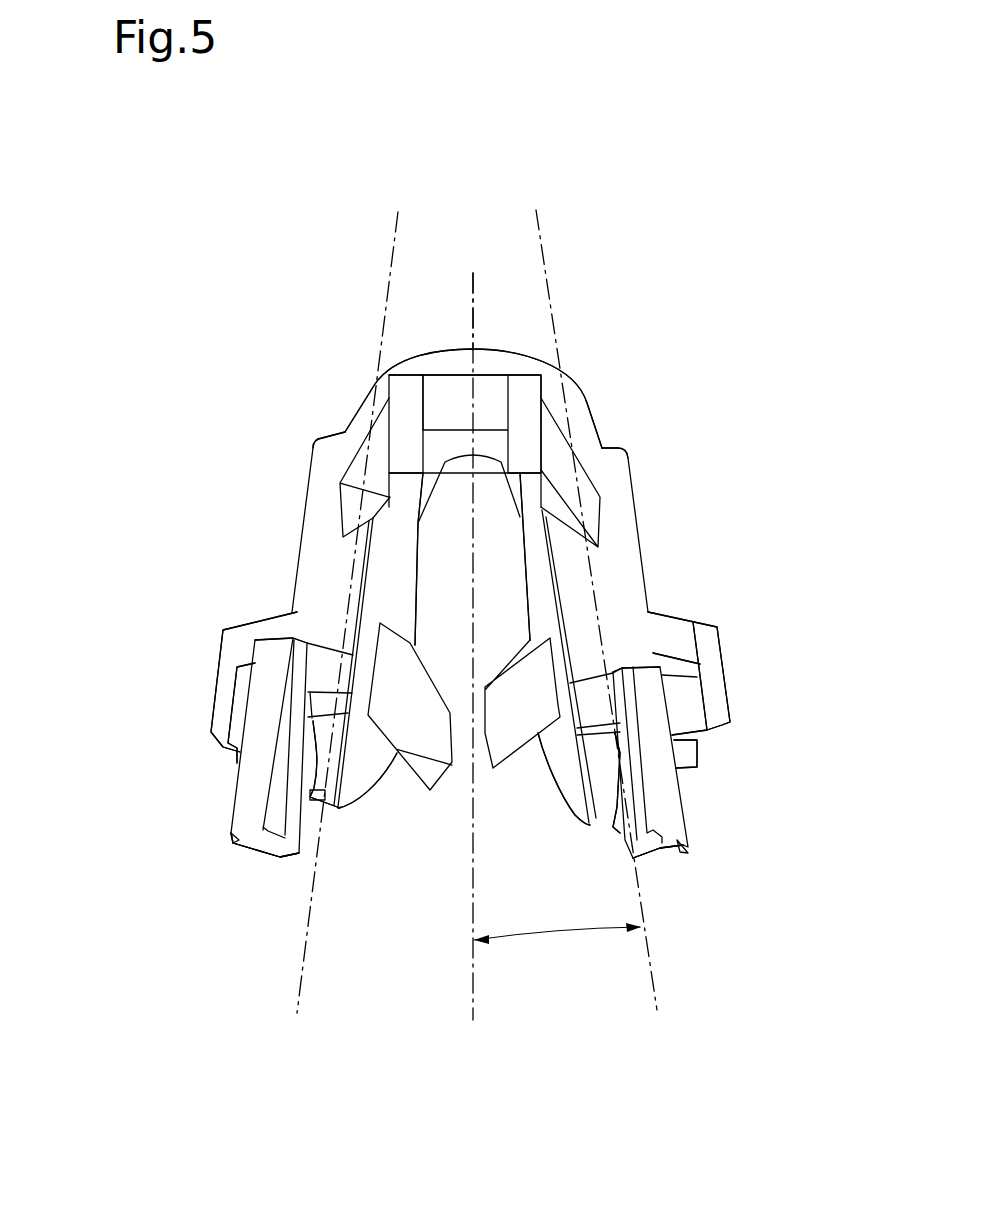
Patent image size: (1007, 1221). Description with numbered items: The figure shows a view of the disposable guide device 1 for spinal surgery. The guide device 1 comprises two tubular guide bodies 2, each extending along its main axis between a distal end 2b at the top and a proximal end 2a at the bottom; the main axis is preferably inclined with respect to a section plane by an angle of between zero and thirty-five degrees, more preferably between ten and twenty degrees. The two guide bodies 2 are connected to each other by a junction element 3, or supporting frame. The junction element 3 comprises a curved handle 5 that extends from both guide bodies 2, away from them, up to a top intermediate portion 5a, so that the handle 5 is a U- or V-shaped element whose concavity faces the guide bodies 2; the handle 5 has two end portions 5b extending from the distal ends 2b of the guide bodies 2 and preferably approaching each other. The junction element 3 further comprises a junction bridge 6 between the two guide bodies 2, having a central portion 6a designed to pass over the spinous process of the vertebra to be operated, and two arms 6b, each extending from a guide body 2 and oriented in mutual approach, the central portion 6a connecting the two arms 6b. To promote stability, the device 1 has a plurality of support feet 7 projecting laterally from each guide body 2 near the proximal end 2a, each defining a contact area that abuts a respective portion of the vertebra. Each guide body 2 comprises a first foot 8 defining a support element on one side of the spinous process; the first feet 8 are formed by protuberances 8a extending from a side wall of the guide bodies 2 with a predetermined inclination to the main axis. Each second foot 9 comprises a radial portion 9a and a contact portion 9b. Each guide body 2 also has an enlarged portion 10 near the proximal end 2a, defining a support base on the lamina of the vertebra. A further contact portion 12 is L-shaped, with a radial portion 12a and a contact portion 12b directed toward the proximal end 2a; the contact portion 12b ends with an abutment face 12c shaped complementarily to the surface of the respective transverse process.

The guide device 1 is at (625, 322).
The tubular guide body 2 is at (284, 524).
The proximal end 2a is at (323, 767).
The distal end 2b is at (340, 438).
The junction element 3 is at (448, 295).
The curved handle 5 is at (513, 335).
The top intermediate portion 5a is at (426, 362).
The end portion 5b is at (363, 404).
The junction bridge 6 is at (400, 362).
The central portion 6a is at (452, 417).
The arm 6b is at (363, 485).
The support foot 7 is at (250, 883).
The first foot 8 is at (403, 795).
The protuberance 8a is at (393, 728).
The second foot 9 is at (193, 700).
The radial portion 9a is at (257, 616).
The contact portion 9b is at (217, 670).
The enlarged portion 10 is at (367, 808).
The further contact portion 12 is at (202, 799).
The radial portion 12a is at (335, 668).
The contact portion 12b is at (253, 802).
The abutment face 12c is at (234, 843).